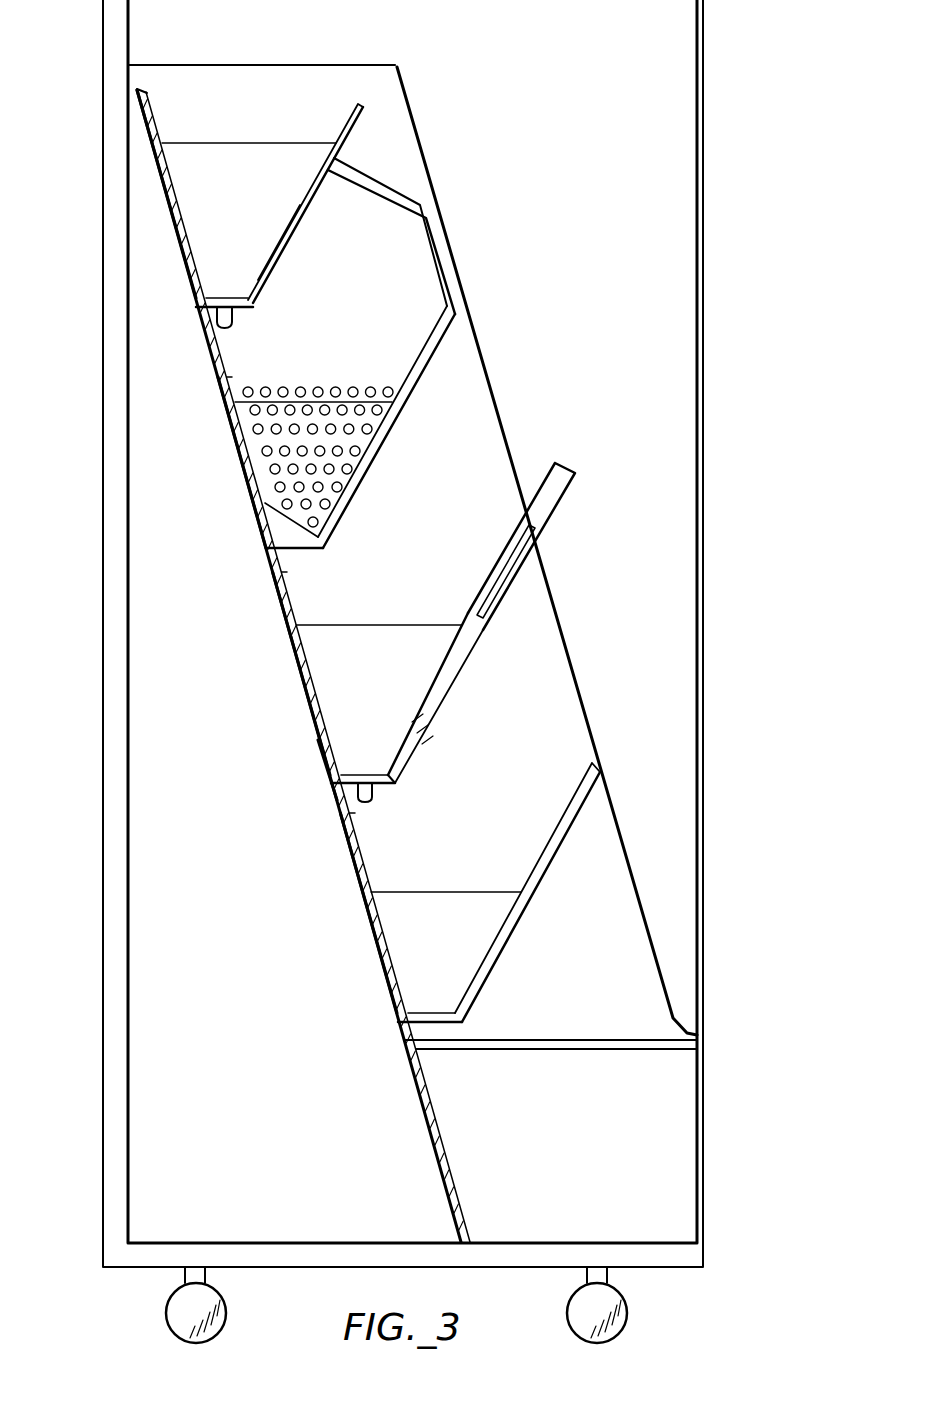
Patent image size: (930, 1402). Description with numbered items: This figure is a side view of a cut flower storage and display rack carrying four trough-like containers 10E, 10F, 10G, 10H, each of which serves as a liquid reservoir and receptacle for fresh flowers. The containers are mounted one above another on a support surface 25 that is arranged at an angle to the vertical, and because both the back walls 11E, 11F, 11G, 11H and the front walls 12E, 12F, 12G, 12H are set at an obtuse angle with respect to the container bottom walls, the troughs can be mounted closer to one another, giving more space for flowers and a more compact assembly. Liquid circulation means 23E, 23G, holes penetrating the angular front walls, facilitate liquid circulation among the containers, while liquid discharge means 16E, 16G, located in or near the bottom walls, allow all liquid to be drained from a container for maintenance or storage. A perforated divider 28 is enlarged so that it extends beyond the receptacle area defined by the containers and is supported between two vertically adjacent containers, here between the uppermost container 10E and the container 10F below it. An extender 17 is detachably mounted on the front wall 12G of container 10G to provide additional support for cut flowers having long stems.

The trough-like container 10E is at (262, 128).
The back wall 11E is at (163, 203).
The front wall 12E is at (357, 133).
The liquid circulation means 23E is at (268, 262).
The liquid discharge means 16E is at (223, 330).
The perforated divider 28 is at (415, 234).
The trough-like container 10F is at (397, 447).
The back wall 11F is at (235, 453).
The front wall 12F is at (355, 495).
The extender 17 is at (563, 486).
The trough-like container 10G is at (460, 701).
The back wall 11G is at (300, 682).
The liquid circulation means 23G is at (423, 737).
The front wall 12G is at (398, 777).
The support surface 25 is at (320, 767).
The liquid discharge means 16G is at (363, 812).
The trough-like container 10H is at (577, 835).
The back wall 11H is at (377, 940).
The front wall 12H is at (495, 963).